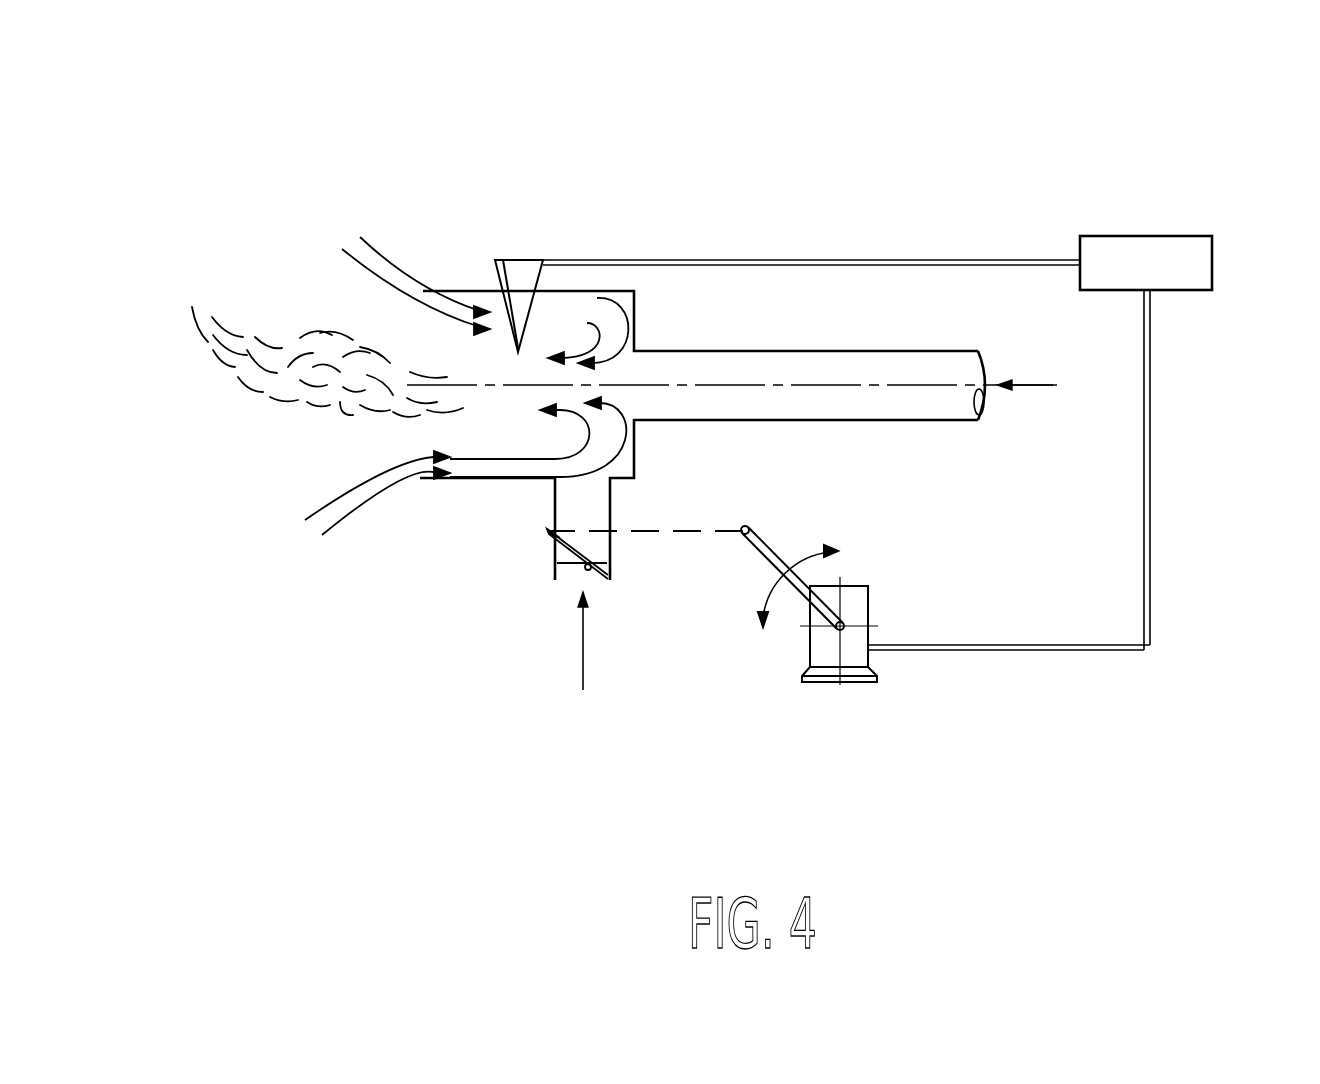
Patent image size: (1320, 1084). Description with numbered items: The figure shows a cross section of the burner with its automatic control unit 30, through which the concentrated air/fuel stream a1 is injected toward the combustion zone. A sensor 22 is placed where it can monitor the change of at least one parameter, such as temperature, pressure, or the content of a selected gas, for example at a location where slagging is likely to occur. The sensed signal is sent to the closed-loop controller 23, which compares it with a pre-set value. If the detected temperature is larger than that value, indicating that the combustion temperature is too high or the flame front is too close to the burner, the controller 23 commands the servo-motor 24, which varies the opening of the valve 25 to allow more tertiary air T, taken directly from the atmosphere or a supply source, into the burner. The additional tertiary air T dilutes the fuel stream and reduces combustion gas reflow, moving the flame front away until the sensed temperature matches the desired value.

The sensor 22 is at (521, 257).
The closed-loop controller 23 is at (1147, 236).
The servo-motor 24 is at (848, 684).
The valve 25 is at (610, 582).
The automatic control unit 30 is at (775, 196).
The tertiary air T is at (582, 680).
The concentrated air/fuel stream a1 is at (1056, 381).